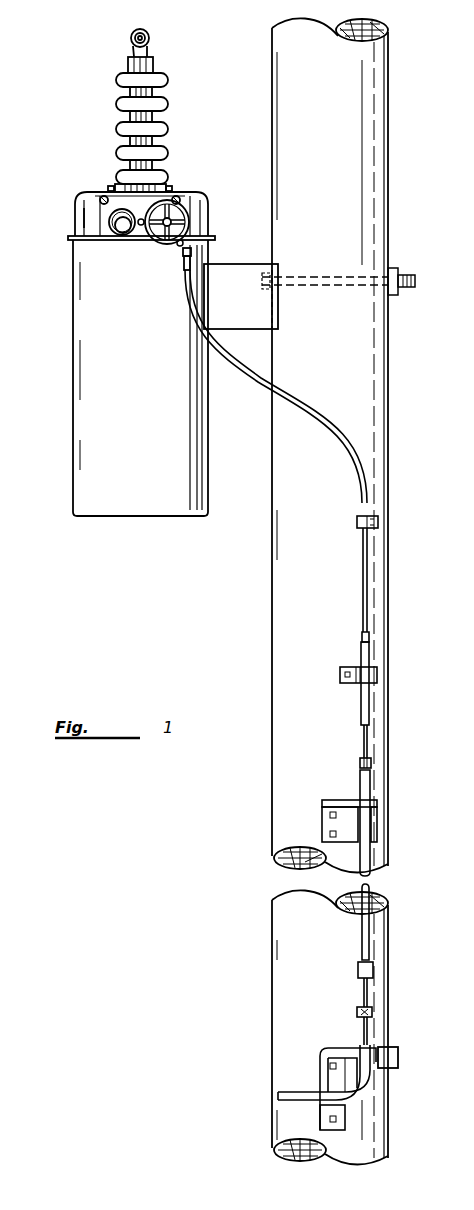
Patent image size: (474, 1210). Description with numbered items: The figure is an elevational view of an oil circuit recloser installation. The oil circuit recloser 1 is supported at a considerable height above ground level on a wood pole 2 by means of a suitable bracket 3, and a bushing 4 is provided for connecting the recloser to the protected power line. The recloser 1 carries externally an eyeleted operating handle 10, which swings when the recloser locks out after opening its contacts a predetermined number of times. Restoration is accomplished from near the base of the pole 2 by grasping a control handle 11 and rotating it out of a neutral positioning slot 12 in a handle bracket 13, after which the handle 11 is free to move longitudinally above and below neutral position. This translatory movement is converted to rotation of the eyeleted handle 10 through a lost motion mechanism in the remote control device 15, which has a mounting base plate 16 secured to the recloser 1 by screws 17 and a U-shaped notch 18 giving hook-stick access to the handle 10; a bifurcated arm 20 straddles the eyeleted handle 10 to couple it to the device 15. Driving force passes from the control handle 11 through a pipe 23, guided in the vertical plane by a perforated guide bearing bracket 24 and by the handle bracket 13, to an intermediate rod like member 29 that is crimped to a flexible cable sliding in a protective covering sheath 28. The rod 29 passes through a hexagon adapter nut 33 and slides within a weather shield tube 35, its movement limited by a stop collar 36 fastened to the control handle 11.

The oil circuit recloser 1 is at (138, 517).
The wood pole 2 is at (270, 617).
The bracket 3 is at (241, 296).
The bushing 4 is at (124, 122).
The eyeleted operating handle 10 is at (127, 238).
The control handle 11 is at (365, 1080).
The neutral positioning slot 12 is at (320, 1092).
The handle bracket 13 is at (399, 1058).
The remote control device 15 is at (197, 198).
The mounting base plate 16 is at (98, 218).
The screws 17 is at (102, 197).
The U-shaped notch 18 is at (117, 211).
The bifurcated arm 20 is at (139, 240).
The pipe 23 is at (366, 853).
The perforated guide bearing bracket 24 is at (373, 819).
The protective covering sheath 28 is at (366, 588).
The rod like member 29 is at (368, 738).
The hexagon adapter nut 33 is at (358, 761).
The weather shield tube 35 is at (366, 703).
The stop collar 36 is at (373, 1013).